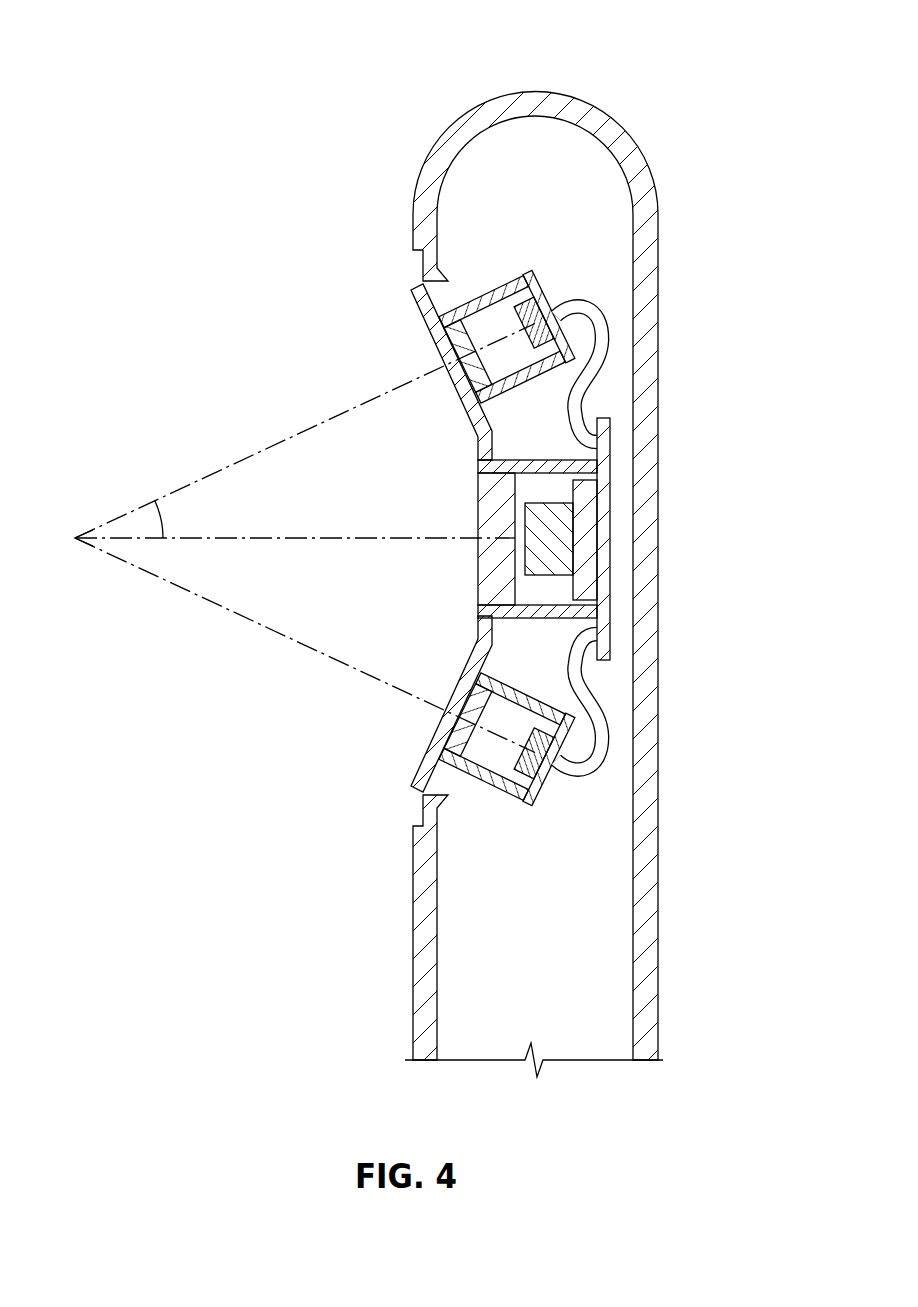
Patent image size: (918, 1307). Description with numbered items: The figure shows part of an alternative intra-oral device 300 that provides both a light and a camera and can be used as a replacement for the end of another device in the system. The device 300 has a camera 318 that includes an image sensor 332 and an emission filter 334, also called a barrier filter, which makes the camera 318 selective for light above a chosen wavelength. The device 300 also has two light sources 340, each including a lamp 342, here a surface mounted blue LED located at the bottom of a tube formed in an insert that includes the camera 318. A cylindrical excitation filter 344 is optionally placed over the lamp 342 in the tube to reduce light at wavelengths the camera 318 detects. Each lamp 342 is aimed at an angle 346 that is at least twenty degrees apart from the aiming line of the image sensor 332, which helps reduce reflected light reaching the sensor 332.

The intra-oral device 300 is at (710, 392).
The camera 318 is at (640, 496).
The image sensor 332 is at (557, 550).
The emission filter 334 is at (478, 494).
The light source 340 is at (476, 242).
The lamp 342 is at (500, 320).
The excitation filter 344 is at (437, 352).
The angle 346 is at (165, 517).